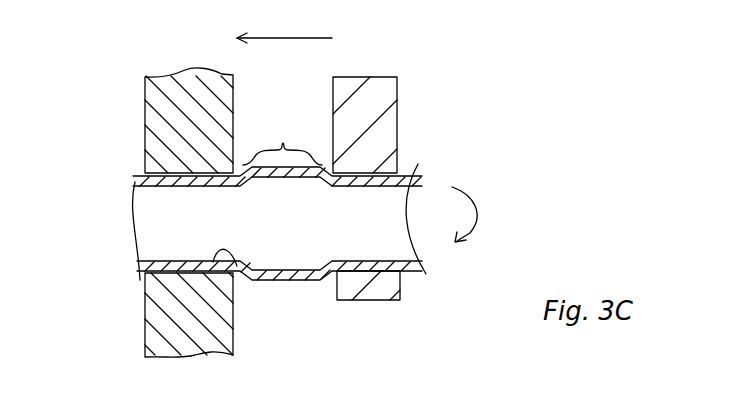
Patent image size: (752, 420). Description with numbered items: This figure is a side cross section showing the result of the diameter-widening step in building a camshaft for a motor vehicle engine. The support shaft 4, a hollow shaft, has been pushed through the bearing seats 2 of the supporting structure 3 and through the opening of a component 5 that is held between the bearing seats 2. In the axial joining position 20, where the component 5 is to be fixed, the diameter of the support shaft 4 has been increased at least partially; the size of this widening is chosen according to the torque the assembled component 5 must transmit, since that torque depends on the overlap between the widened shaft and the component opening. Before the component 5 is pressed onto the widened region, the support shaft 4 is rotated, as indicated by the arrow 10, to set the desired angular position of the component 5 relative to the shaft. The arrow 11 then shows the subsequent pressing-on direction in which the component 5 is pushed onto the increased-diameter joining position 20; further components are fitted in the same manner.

The bearing seat 2 is at (237, 266).
The supporting structure 3 is at (170, 115).
The support shaft 4 is at (136, 175).
The component 5 is at (345, 118).
The arrow 10 is at (478, 223).
The arrow 11 is at (284, 21).
The joining position 20 is at (282, 136).